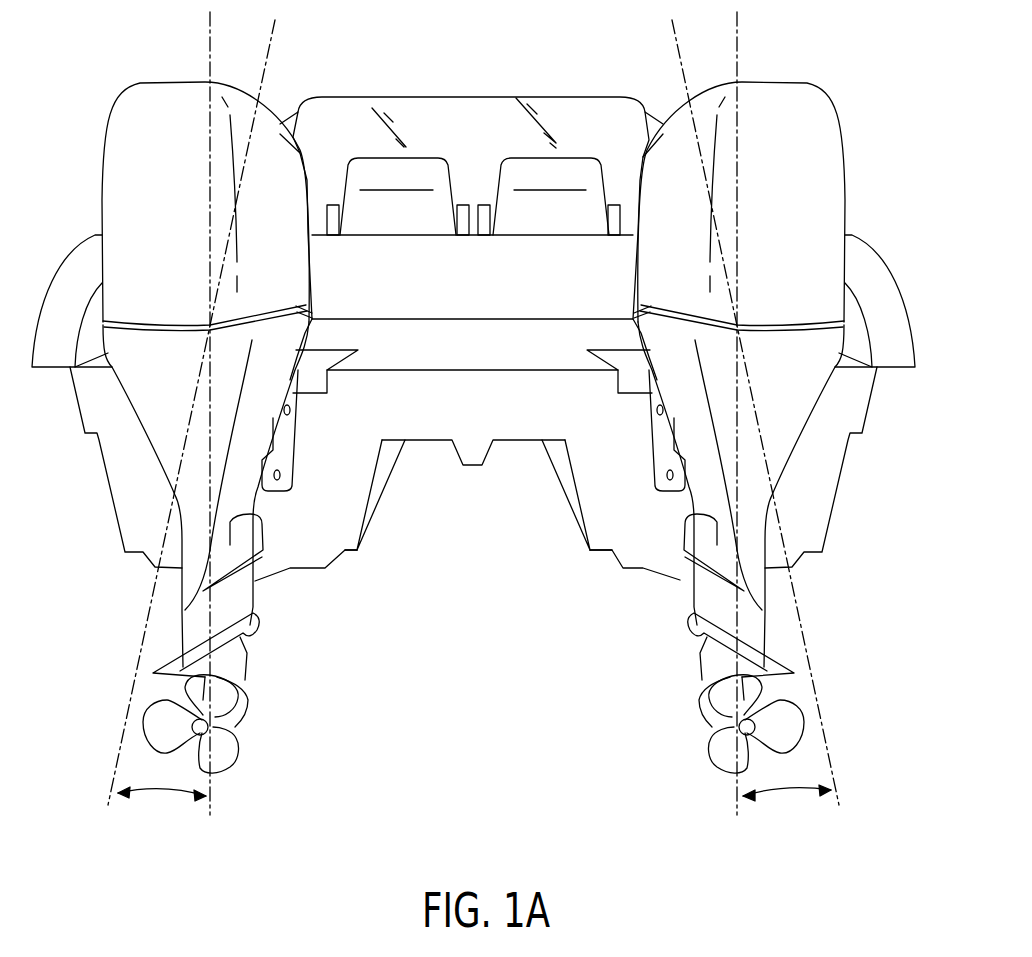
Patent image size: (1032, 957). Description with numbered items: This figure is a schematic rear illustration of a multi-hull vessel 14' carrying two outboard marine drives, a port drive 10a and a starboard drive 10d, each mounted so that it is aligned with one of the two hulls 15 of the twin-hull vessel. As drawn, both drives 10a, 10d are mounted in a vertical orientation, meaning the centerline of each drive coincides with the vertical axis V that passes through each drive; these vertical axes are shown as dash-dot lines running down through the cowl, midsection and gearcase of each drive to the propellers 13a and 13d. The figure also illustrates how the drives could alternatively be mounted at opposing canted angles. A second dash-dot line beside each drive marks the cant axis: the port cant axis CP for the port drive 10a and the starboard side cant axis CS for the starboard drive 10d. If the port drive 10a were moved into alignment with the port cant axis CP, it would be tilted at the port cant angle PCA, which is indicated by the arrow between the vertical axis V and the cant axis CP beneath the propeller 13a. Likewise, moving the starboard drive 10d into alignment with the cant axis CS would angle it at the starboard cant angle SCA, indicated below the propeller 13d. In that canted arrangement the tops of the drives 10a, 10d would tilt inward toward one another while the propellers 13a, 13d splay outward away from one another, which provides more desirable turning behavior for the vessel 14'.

The port outboard drive 10a is at (137, 110).
The starboard outboard drive 10d is at (811, 118).
The propeller 13a is at (222, 760).
The propeller 13d is at (707, 721).
The multi-hull vessel 14' is at (473, 339).
The hull 15 is at (330, 527).
The vertical axis V is at (208, 52).
The port cant axis CP is at (128, 702).
The starboard side cant axis CS is at (800, 629).
The port cant angle PCA is at (165, 793).
The starboard cant angle SCA is at (785, 793).